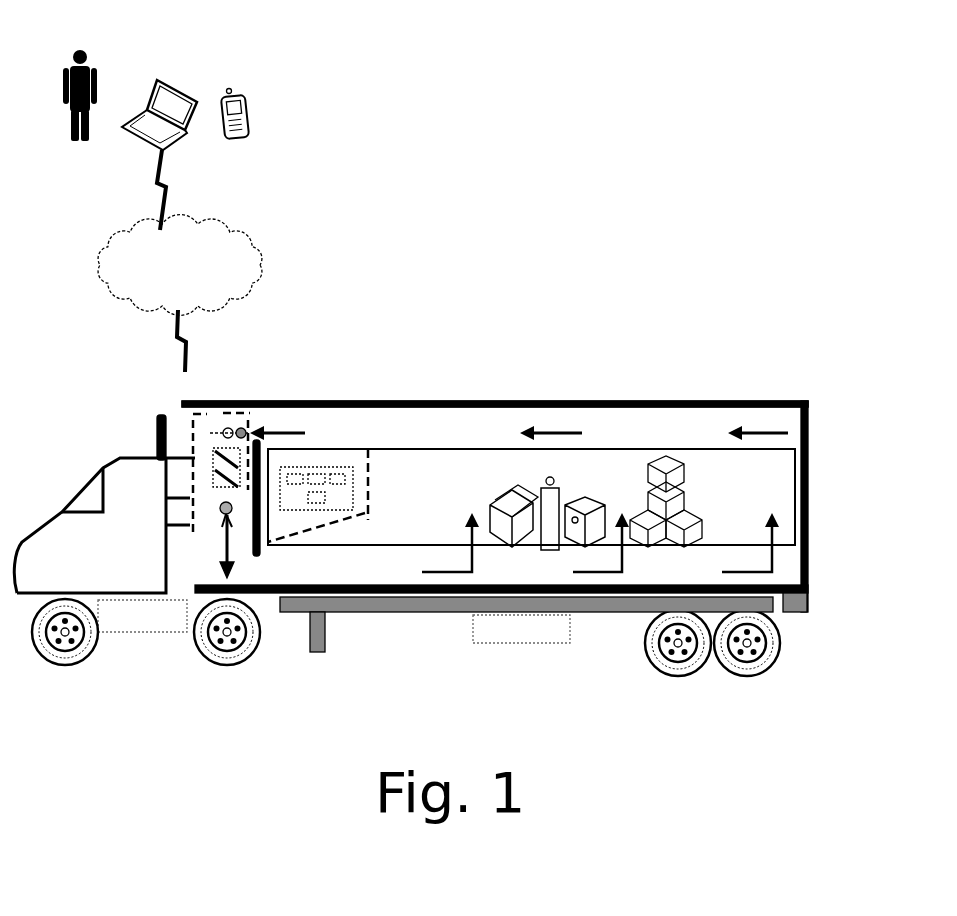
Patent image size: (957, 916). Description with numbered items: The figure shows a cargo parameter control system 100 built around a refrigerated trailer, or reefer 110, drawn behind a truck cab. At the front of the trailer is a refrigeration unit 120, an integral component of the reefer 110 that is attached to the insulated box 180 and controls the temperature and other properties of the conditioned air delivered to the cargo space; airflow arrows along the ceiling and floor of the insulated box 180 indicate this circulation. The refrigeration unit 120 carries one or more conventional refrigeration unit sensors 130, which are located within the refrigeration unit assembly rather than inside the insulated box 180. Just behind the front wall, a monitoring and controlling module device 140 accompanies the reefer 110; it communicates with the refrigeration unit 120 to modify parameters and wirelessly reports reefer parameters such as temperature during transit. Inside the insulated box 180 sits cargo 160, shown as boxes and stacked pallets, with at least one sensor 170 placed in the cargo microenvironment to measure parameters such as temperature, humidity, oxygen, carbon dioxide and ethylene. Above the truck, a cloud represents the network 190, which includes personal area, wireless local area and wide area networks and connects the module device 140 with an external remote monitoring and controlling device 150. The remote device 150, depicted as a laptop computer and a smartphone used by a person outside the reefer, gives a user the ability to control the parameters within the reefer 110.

The cargo parameter control system 100 is at (690, 315).
The reefer 110 is at (242, 413).
The refrigeration unit 120 is at (193, 422).
The refrigeration unit sensors 130 is at (233, 512).
The monitoring and controlling module device 140 is at (323, 467).
The external remote monitoring and controlling device 150 is at (230, 97).
The cargo 160 is at (705, 530).
The sensor 170 is at (688, 498).
The insulated box 180 is at (360, 400).
The network 190 is at (258, 242).